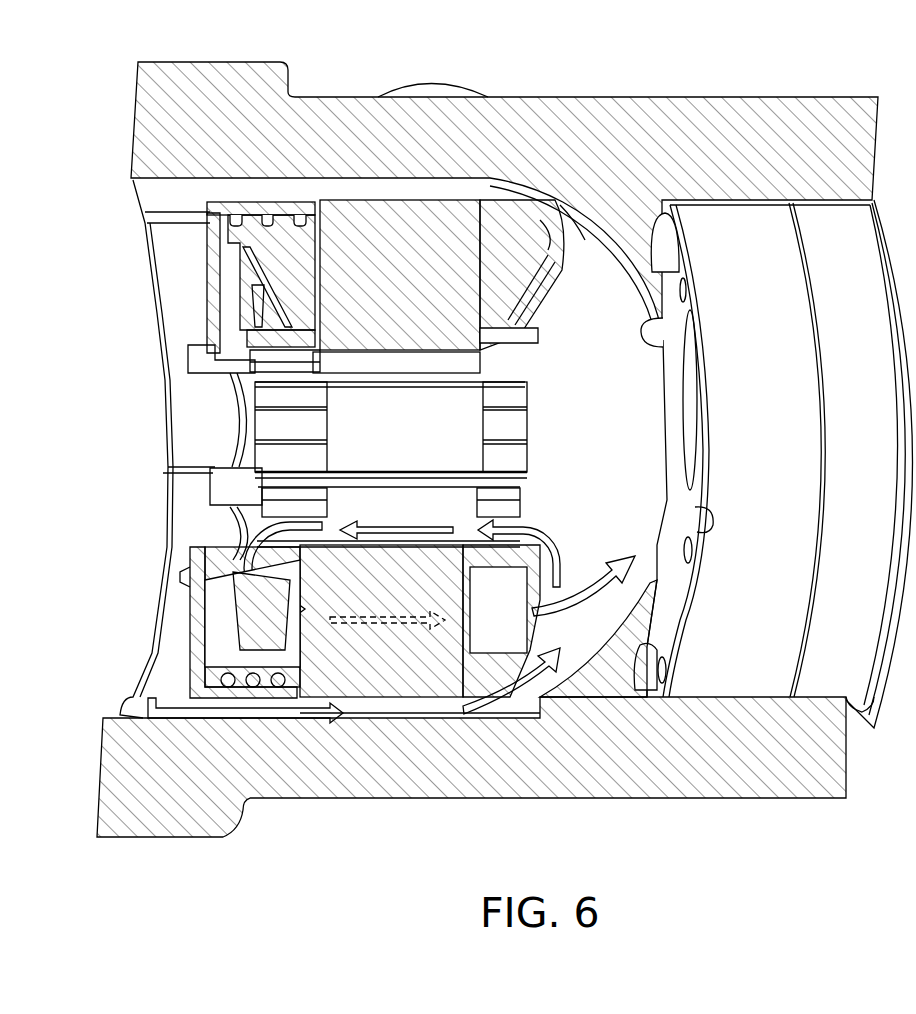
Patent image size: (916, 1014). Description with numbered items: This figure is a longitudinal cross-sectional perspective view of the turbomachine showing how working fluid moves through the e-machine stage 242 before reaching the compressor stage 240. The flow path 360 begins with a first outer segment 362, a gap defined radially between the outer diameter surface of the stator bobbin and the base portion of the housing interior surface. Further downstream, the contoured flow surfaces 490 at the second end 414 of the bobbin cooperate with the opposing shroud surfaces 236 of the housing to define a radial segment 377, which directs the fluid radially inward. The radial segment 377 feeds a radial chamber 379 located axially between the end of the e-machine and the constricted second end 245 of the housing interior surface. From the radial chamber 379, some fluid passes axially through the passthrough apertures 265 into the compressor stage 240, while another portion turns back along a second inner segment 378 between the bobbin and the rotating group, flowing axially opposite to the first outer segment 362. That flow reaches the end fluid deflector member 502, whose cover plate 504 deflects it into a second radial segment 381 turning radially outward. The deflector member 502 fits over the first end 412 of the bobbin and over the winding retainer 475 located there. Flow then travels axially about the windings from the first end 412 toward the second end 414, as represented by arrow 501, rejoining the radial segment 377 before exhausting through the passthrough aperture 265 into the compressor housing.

The e-machine stage 242 is at (615, 65).
The compressor stage 240 is at (880, 65).
The constricted second end 245 is at (657, 320).
The passthrough aperture 265 is at (663, 352).
The flow path 360 is at (282, 731).
The first outer segment 362 is at (400, 720).
The end fluid deflector member 502 is at (210, 262).
The first end 412 is at (228, 223).
The winding retainer 475 is at (289, 214).
The shroud surfaces 236 is at (555, 260).
The contoured flow surfaces 490 is at (537, 233).
The second end 414 is at (563, 230).
The radial chamber 379 is at (635, 470).
The second inner segment 378 is at (373, 520).
The second radial segment 381 is at (242, 545).
The cover plate 504 is at (190, 600).
The arrow 501 is at (377, 627).
The radial segment 377 is at (527, 700).